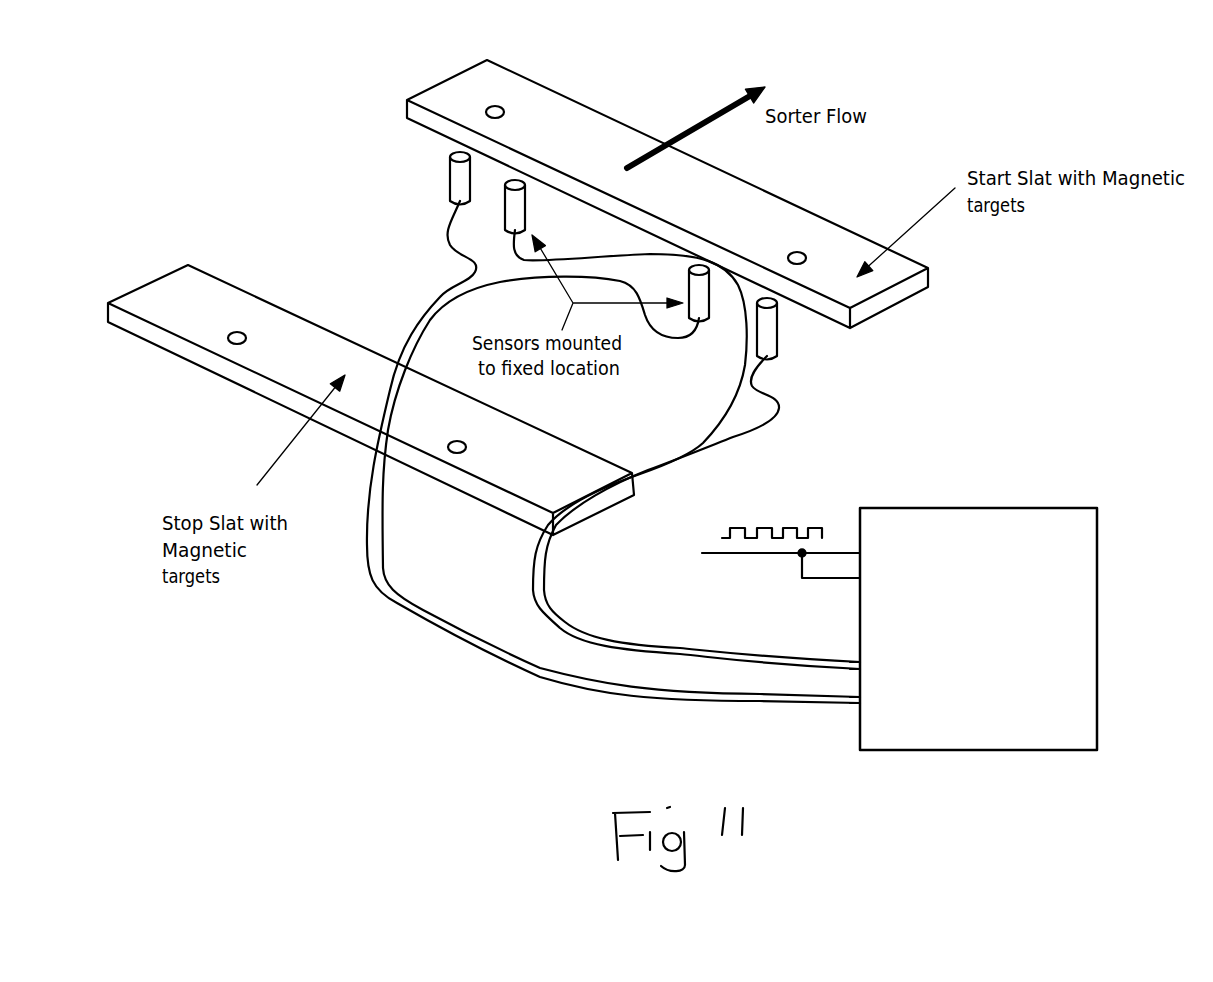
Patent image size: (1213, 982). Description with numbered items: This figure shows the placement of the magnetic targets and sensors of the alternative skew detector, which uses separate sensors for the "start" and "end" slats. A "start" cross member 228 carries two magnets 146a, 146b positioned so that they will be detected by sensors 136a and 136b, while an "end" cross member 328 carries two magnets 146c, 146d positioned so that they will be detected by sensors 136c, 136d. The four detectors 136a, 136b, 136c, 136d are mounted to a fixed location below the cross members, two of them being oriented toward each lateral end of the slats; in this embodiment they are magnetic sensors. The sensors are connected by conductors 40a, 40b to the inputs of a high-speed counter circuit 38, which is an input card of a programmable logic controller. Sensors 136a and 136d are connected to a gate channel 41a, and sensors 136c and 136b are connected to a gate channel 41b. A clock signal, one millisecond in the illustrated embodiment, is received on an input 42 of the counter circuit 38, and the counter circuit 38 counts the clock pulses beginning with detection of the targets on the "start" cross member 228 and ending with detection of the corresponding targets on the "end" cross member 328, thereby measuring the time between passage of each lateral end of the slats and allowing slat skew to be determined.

The start cross member 228 is at (810, 208).
The end cross member 328 is at (533, 425).
The magnet 146a is at (503, 104).
The magnet 146b is at (806, 252).
The magnet 146c is at (218, 352).
The magnet 146d is at (452, 457).
The detector 136a is at (450, 177).
The detector 136b is at (777, 340).
The detector 136c is at (525, 203).
The detector 136d is at (728, 343).
The conductor 40a is at (632, 672).
The conductor 40b is at (592, 612).
The gate channel 41a is at (858, 705).
The gate channel 41b is at (858, 665).
The clock signal input 42 is at (765, 556).
The high-speed counter circuit 38 is at (1045, 508).